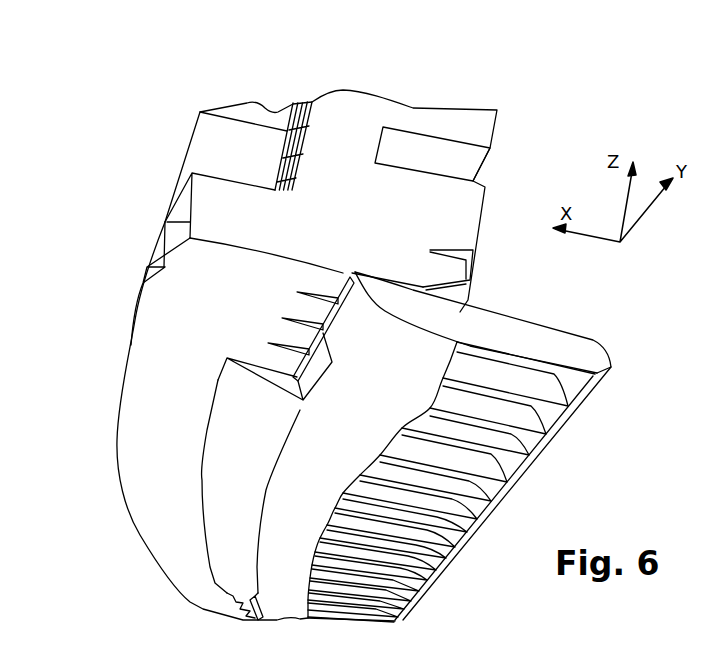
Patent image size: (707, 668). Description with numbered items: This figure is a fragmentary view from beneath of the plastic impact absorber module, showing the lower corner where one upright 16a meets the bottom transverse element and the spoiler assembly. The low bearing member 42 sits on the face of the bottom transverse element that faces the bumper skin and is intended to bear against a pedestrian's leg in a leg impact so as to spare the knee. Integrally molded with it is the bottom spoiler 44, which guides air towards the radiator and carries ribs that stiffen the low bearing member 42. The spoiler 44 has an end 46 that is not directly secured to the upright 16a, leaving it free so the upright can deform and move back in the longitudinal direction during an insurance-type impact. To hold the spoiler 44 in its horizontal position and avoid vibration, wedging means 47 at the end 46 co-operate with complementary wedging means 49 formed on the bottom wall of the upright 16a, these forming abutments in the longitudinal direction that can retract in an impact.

The upright 16a is at (353, 120).
The low bearing member 42 is at (138, 442).
The bottom spoiler 44 is at (302, 510).
The end of spoiler 46 is at (517, 337).
The wedging means 47 is at (380, 293).
The complementary wedging means 49 is at (348, 277).